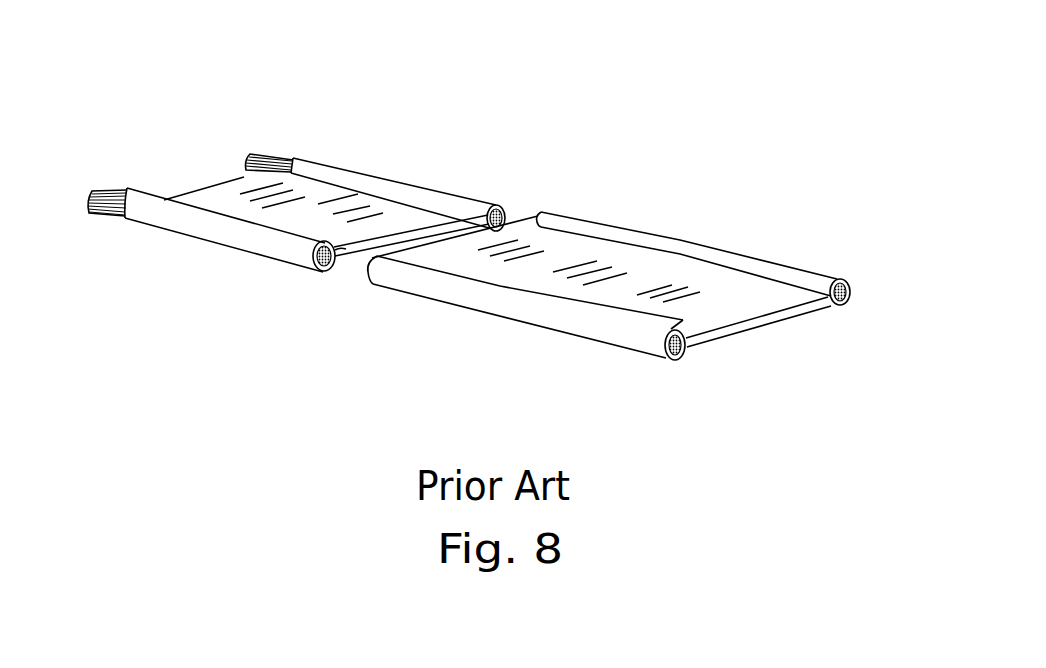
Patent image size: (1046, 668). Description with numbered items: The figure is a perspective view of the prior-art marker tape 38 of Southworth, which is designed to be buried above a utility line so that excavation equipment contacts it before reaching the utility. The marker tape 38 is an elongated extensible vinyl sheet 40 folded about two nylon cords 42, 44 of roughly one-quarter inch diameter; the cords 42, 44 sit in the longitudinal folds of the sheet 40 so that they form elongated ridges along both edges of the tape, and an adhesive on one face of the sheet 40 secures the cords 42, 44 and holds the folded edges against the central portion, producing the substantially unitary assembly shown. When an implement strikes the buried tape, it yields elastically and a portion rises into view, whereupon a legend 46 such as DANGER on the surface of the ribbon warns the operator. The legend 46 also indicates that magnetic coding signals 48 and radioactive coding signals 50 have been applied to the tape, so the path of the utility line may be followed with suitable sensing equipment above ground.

The marker tape 38 is at (471, 146).
The vinyl sheet 40 is at (352, 257).
The nylon cord 42 is at (323, 253).
The nylon cord 44 is at (505, 216).
The legend 46 is at (708, 275).
The magnetic coding signals 48 is at (284, 189).
The radioactive coding signals 50 is at (328, 212).